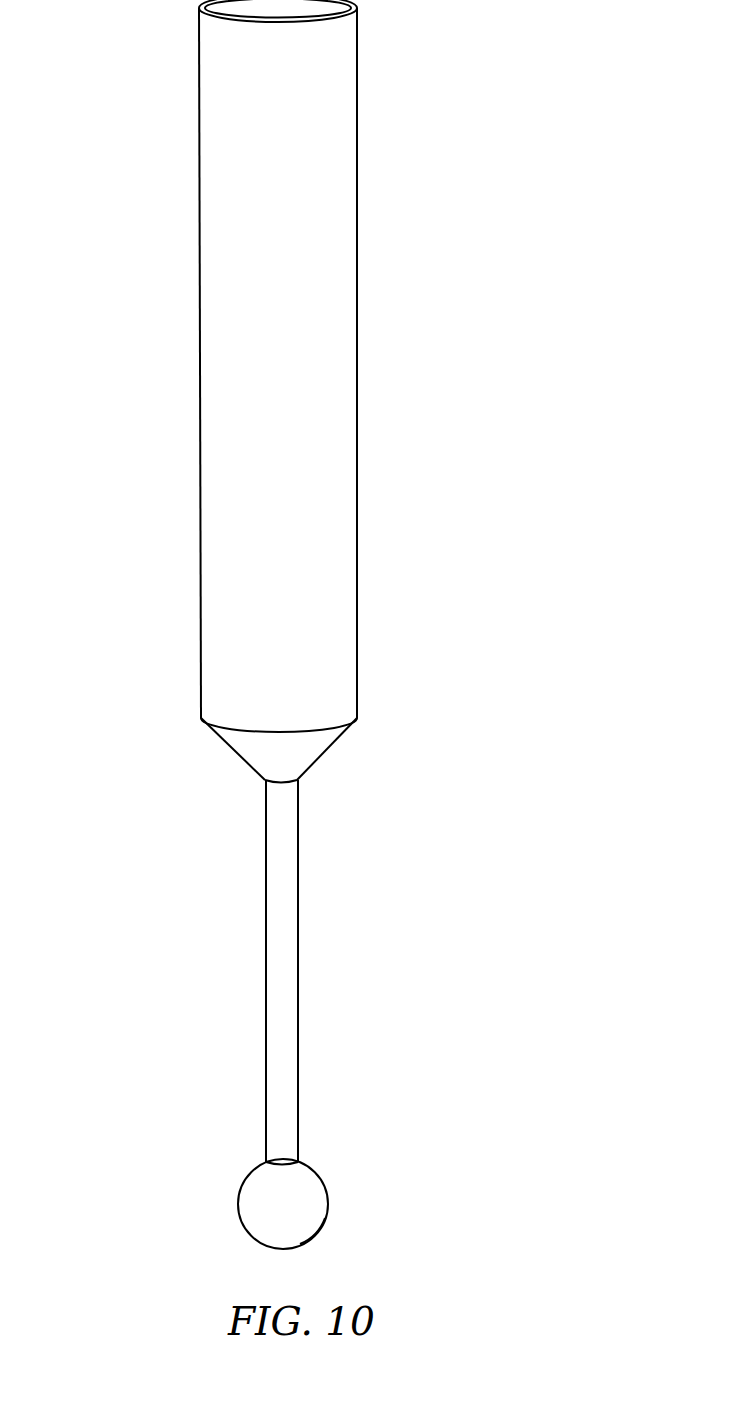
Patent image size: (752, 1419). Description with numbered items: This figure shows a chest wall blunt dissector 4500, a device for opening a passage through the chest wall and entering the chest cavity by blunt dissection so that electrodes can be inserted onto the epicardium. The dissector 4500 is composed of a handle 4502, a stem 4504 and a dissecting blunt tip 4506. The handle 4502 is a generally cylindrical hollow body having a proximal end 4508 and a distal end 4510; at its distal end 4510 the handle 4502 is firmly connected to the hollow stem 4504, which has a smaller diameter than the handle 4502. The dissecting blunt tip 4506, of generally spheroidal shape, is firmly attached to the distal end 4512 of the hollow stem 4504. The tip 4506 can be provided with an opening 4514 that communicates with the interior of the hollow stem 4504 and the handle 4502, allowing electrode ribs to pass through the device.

The chest wall blunt dissector 4500 is at (160, 180).
The handle 4502 is at (358, 217).
The stem 4504 is at (299, 882).
The dissecting blunt tip 4506 is at (250, 1172).
The proximal end 4508 is at (357, 57).
The distal end 4510 is at (316, 760).
The distal end 4512 is at (300, 1140).
The opening 4514 is at (325, 1218).